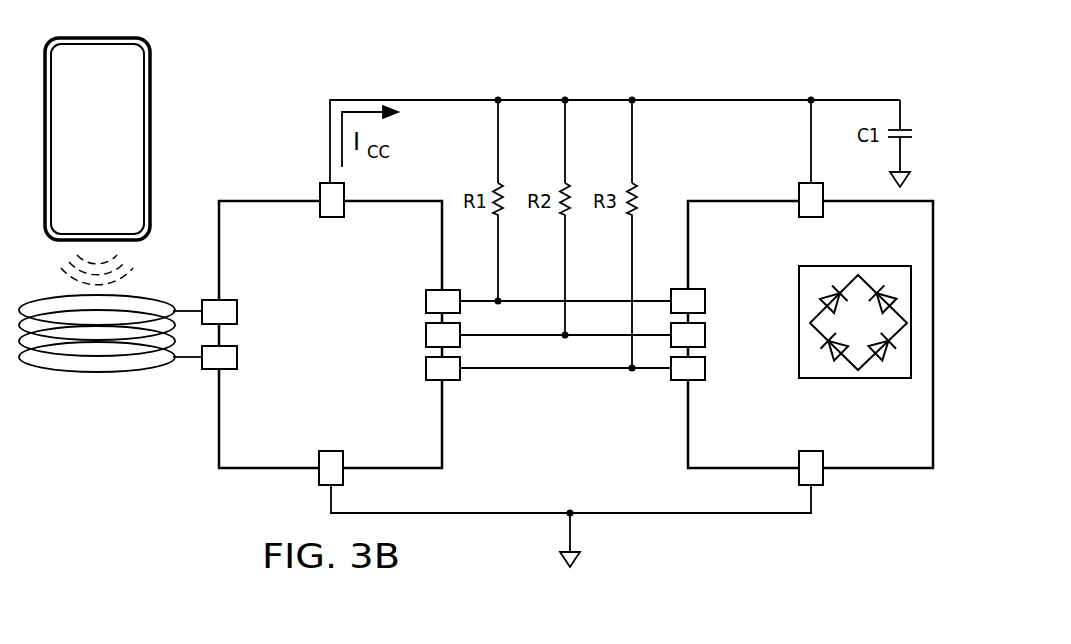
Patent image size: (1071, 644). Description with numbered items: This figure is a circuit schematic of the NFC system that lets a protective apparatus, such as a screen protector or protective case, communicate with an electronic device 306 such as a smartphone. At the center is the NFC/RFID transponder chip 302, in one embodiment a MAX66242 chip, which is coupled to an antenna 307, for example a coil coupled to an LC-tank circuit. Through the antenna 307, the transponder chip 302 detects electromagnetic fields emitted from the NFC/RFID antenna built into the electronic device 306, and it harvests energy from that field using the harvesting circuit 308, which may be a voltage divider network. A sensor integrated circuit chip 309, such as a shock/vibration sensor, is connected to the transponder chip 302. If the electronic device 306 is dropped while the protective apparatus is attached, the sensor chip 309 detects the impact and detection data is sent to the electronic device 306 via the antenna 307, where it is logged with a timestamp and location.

The NFC/RFID transponder chip 302 is at (353, 351).
The electronic device 306 is at (118, 155).
The antenna 307 is at (97, 374).
The harvesting circuit 308 is at (720, 99).
The sensor integrated circuit chip 309 is at (870, 474).